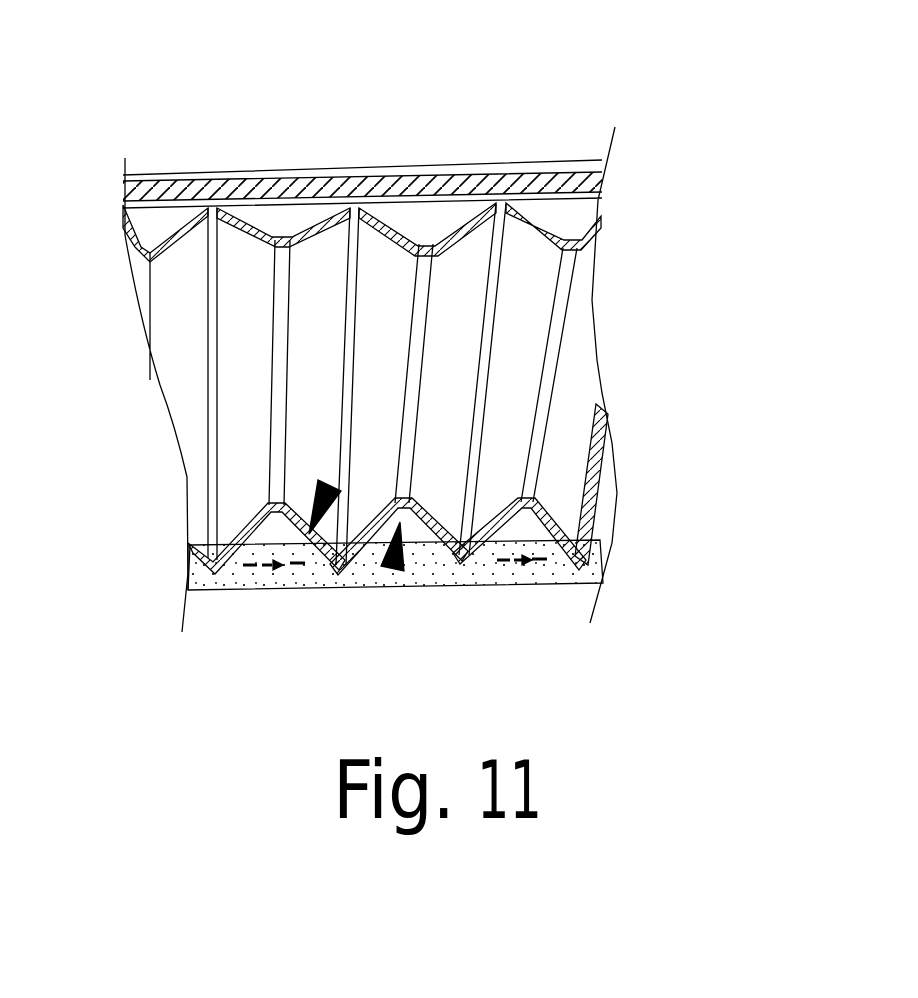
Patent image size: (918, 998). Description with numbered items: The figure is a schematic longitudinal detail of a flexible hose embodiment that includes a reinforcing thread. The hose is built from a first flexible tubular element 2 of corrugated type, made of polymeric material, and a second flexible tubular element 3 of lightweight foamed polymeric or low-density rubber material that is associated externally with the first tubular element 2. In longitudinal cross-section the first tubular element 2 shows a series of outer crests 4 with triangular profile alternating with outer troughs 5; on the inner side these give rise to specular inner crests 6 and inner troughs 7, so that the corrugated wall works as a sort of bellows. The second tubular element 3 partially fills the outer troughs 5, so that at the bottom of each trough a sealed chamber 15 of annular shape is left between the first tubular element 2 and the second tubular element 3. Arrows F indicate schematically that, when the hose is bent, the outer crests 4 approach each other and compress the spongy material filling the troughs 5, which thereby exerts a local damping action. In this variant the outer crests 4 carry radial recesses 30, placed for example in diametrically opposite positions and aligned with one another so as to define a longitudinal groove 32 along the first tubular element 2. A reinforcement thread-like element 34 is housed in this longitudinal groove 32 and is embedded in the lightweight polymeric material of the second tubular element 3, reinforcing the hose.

The first flexible tubular element 2 is at (155, 397).
The second flexible tubular element 3 is at (163, 171).
The outer crests 4 is at (457, 585).
The troughs 5 is at (370, 585).
The inner crests 6 is at (277, 507).
The inner troughs 7 is at (347, 420).
The chambers of annular shape 15 is at (188, 548).
The radial recesses 30 is at (216, 172).
The longitudinal groove 32 is at (612, 180).
The reinforcement thread-like element 34 is at (540, 183).
The arrows F is at (241, 590).